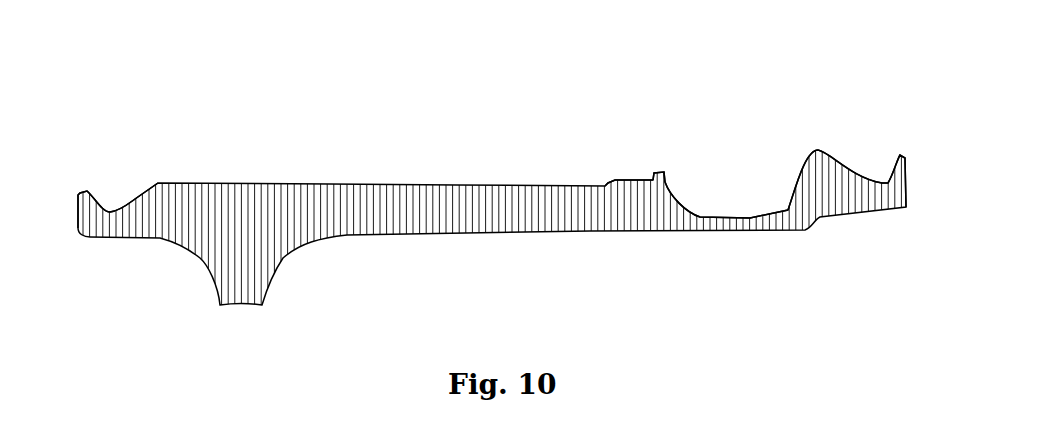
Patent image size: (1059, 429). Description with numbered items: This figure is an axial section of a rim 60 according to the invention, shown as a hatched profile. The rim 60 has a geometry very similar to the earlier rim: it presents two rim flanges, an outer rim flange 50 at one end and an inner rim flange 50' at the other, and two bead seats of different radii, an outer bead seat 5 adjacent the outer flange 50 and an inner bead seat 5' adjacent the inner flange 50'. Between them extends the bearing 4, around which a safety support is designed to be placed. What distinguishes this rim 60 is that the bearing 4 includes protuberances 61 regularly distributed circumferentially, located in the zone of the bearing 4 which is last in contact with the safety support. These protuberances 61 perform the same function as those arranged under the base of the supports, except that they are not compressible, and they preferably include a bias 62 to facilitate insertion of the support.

The bearing 4 is at (456, 185).
The outer bead seat 5 is at (126, 166).
The outer rim flange 50 is at (90, 156).
The inner bead seat 5' is at (843, 126).
The inner rim flange 50' is at (911, 145).
The rim 60 is at (668, 123).
The protuberances 61 is at (634, 184).
The bias 62 is at (608, 181).